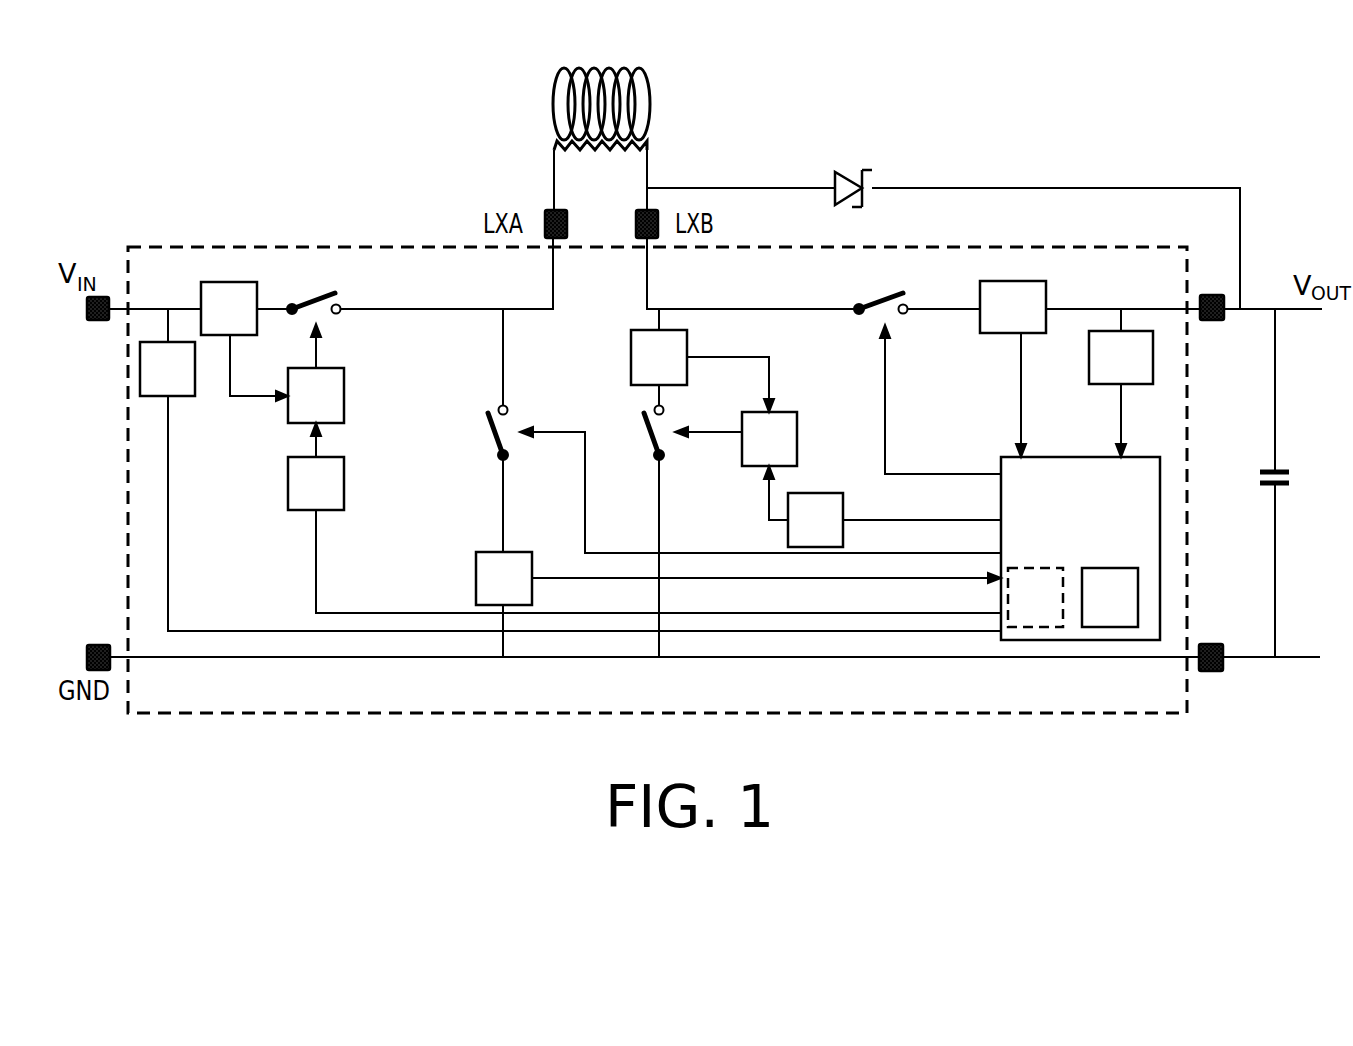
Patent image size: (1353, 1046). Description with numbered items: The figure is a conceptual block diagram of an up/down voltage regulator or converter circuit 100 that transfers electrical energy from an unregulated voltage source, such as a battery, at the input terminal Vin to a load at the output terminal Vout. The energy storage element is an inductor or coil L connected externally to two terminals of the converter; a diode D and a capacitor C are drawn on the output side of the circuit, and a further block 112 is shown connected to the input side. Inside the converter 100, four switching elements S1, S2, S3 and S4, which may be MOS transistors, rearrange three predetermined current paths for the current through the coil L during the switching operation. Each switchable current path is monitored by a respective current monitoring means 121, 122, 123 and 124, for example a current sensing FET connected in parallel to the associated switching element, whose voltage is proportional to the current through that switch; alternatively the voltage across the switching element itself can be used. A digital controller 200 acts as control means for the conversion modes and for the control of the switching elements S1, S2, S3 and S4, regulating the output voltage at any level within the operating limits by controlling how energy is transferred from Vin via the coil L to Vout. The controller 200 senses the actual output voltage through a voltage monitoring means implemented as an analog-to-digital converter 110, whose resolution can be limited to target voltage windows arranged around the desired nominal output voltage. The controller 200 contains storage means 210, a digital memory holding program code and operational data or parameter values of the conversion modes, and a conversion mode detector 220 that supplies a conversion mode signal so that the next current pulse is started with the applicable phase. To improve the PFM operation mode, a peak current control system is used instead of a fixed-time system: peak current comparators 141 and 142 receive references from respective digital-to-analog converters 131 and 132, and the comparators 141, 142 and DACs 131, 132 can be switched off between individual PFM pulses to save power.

The converter circuit 100 is at (128, 551).
The analog-to-digital converter 110 is at (1141, 374).
The input voltage sensing block 112 is at (188, 385).
The current monitoring means 121 is at (249, 324).
The current monitoring means 122 is at (679, 374).
The current monitoring means 123 is at (1033, 323).
The current monitoring means 124 is at (524, 594).
The digital-to-analog converter 131 is at (336, 500).
The digital-to-analog converter 132 is at (836, 536).
The peak current comparator 141 is at (336, 412).
The peak current comparator 142 is at (789, 455).
The controller 200 is at (1100, 510).
The storage means 210 is at (1130, 614).
The conversion mode detector 220 is at (1055, 614).
The inductor L is at (553, 105).
The diode D is at (846, 171).
The output capacitor C is at (1286, 483).
The switching element S1 is at (314, 291).
The switching element S2 is at (482, 430).
The switching element S3 is at (638, 521).
The switching element S4 is at (881, 291).